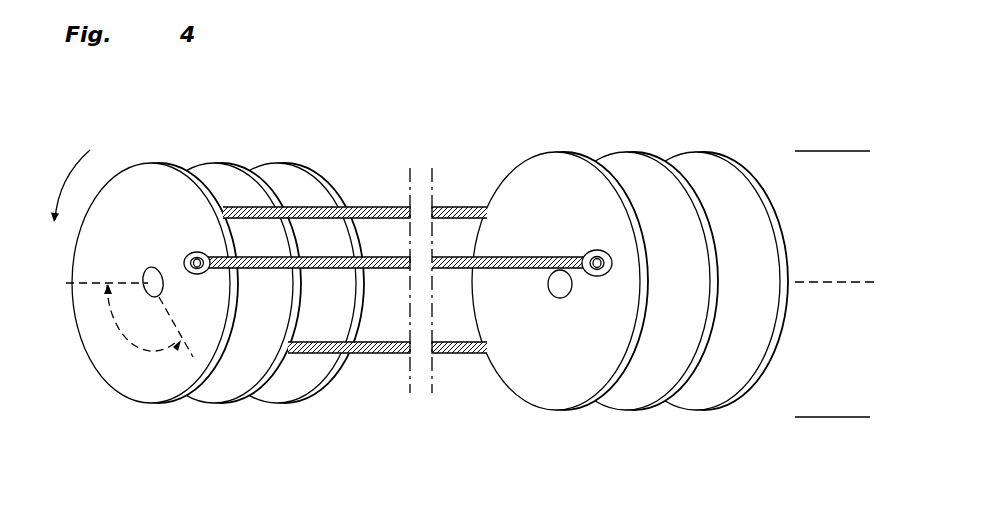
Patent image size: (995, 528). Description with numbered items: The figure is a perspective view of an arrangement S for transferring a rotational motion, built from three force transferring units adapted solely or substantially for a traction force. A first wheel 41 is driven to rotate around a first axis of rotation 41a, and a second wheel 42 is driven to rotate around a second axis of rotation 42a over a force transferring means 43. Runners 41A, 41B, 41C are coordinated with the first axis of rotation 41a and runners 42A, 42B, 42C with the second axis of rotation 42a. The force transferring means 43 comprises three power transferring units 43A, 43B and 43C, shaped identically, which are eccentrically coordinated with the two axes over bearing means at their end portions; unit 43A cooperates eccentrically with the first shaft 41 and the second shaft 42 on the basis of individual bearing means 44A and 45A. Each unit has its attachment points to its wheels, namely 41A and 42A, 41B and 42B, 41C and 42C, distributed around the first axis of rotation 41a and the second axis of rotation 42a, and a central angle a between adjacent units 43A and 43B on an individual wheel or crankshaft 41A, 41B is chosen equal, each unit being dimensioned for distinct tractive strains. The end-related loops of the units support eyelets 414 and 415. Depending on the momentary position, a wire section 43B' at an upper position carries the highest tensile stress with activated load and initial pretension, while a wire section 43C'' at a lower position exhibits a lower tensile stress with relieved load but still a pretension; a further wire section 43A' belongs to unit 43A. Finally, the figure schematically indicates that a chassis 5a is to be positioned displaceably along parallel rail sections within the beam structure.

The first wheel 41 is at (191, 281).
The runner 41A is at (147, 322).
The runner 41B is at (237, 162).
The runner 41C is at (287, 163).
The first axis of rotation 41a is at (147, 280).
The eyelet 414 is at (218, 330).
The bearing means 44A is at (191, 256).
The force transferring means 43 is at (388, 286).
The power transferring unit 43A is at (388, 371).
The wire section 43A' is at (410, 376).
The power transferring unit 43B is at (355, 141).
The wire section 43B' is at (364, 135).
The power transferring unit 43C is at (387, 425).
The wire section 43C'' is at (462, 430).
The second wheel 42 is at (667, 278).
The runner 42A is at (559, 299).
The runner 42B is at (635, 152).
The runner 42C is at (710, 152).
The second axis of rotation 42a is at (823, 282).
The bearing means 45A is at (592, 253).
The eyelet 415 is at (593, 277).
The chassis 5a is at (845, 151).
The arrangement for transferring a rotational motion S is at (414, 238).
The central angle a is at (110, 315).